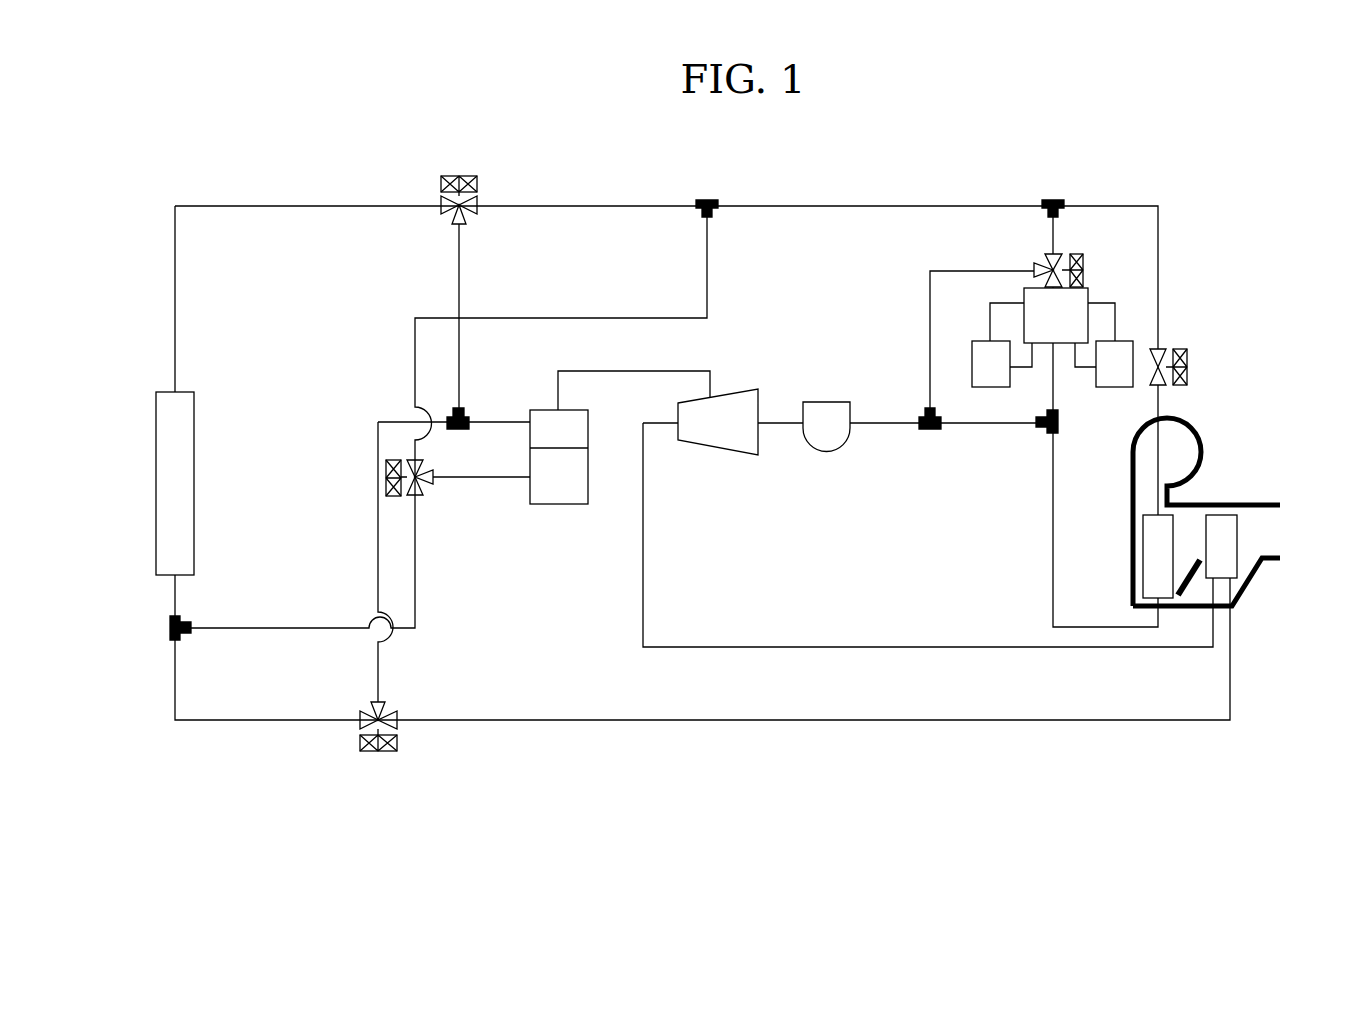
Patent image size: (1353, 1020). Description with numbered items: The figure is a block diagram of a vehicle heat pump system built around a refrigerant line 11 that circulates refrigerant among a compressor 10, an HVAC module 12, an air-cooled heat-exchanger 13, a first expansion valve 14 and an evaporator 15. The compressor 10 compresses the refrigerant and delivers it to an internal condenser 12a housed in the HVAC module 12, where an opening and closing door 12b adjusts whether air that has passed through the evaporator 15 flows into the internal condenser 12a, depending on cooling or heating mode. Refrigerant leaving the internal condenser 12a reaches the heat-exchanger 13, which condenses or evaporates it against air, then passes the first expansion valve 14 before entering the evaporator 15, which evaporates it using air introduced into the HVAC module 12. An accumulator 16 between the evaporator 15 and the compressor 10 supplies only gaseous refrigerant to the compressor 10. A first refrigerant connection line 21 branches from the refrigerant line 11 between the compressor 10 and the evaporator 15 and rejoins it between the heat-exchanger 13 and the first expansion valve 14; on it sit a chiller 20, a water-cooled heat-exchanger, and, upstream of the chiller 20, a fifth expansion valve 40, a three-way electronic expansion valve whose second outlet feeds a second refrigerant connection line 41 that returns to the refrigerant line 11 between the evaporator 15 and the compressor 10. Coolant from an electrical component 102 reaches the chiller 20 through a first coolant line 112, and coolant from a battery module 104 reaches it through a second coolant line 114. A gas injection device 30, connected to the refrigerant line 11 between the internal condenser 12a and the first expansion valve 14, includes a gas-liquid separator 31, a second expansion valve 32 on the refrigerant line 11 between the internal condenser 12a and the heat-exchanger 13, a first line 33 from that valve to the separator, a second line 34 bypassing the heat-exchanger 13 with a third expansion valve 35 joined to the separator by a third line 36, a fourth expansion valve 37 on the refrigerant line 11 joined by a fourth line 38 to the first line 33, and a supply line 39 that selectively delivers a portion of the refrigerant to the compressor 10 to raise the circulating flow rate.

The compressor 10 is at (722, 452).
The refrigerant line 11 is at (868, 206).
The HVAC module 12 is at (1220, 510).
The internal condenser 12a is at (1238, 538).
The opening and closing door 12b is at (1188, 559).
The heat-exchanger 13 is at (156, 482).
The first expansion valve 14 is at (1187, 367).
The evaporator 15 is at (1143, 560).
The accumulator 16 is at (828, 402).
The chiller 20 is at (1088, 292).
The first refrigerant connection line 21 is at (1053, 236).
The gas injection device 30 is at (534, 496).
The gas-liquid separator 31 is at (559, 506).
The second expansion valve 32 is at (378, 752).
The first line 33 is at (378, 547).
The second line 34 is at (569, 318).
The third expansion valve 35 is at (386, 480).
The third line 36 is at (471, 478).
The fourth expansion valve 37 is at (460, 176).
The fourth line 38 is at (459, 265).
The supply line 39 is at (629, 371).
The fifth expansion valve 40 is at (1083, 266).
The second refrigerant connection line 41 is at (930, 297).
The electrical component 102 is at (972, 362).
The battery module 104 is at (1115, 387).
The first coolant line 112 is at (1000, 301).
The second coolant line 114 is at (1115, 315).